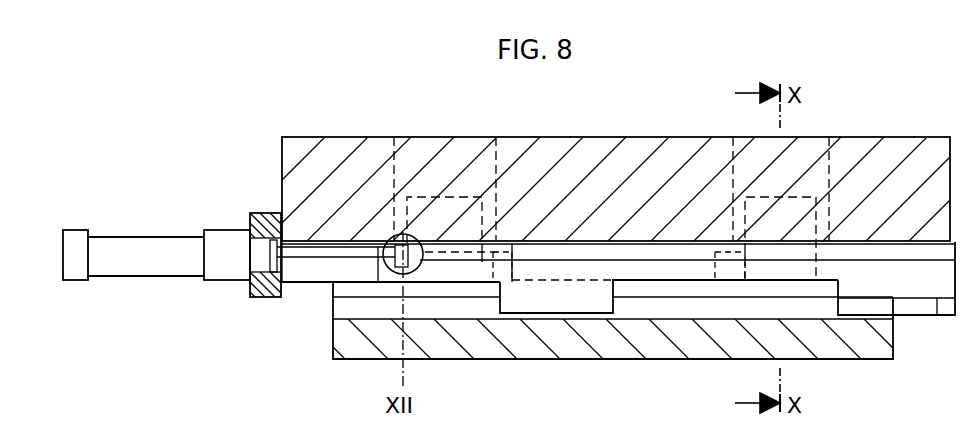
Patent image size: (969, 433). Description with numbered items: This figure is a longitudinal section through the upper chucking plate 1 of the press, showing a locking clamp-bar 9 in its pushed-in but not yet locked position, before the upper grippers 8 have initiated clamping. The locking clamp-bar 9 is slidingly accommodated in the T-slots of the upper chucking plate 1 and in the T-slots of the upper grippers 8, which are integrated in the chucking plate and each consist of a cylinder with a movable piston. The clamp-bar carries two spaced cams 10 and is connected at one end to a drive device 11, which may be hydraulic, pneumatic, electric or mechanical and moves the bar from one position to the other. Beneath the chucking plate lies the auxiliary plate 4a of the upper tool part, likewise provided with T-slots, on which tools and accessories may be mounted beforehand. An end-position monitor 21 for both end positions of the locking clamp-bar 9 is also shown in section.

The upper chucking plate 1 is at (927, 150).
The gripper 8 is at (803, 190).
The locking clamp-bar 9 is at (920, 263).
The cam 10 is at (583, 305).
The drive device 11 is at (138, 262).
The end-position monitor 21 is at (268, 298).
The auxiliary plate 4a is at (852, 340).